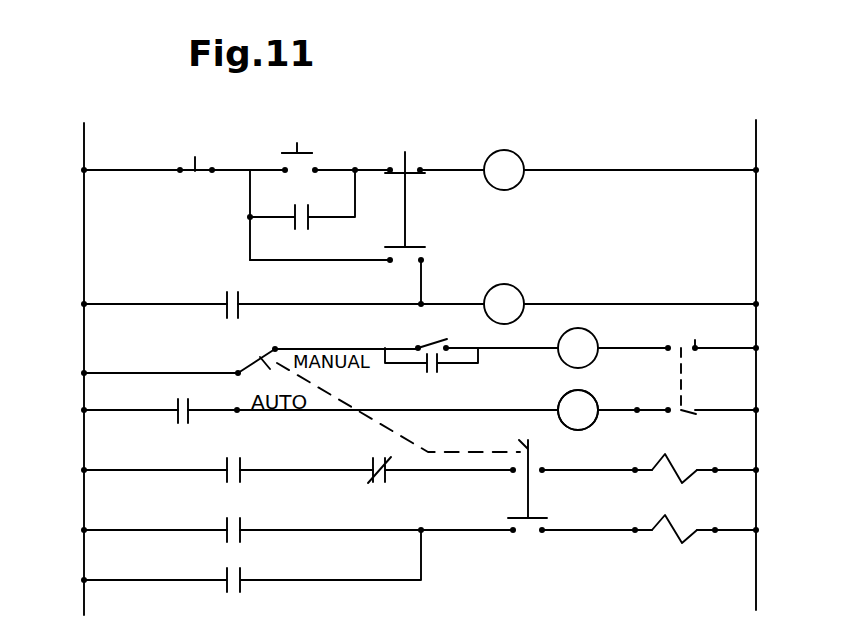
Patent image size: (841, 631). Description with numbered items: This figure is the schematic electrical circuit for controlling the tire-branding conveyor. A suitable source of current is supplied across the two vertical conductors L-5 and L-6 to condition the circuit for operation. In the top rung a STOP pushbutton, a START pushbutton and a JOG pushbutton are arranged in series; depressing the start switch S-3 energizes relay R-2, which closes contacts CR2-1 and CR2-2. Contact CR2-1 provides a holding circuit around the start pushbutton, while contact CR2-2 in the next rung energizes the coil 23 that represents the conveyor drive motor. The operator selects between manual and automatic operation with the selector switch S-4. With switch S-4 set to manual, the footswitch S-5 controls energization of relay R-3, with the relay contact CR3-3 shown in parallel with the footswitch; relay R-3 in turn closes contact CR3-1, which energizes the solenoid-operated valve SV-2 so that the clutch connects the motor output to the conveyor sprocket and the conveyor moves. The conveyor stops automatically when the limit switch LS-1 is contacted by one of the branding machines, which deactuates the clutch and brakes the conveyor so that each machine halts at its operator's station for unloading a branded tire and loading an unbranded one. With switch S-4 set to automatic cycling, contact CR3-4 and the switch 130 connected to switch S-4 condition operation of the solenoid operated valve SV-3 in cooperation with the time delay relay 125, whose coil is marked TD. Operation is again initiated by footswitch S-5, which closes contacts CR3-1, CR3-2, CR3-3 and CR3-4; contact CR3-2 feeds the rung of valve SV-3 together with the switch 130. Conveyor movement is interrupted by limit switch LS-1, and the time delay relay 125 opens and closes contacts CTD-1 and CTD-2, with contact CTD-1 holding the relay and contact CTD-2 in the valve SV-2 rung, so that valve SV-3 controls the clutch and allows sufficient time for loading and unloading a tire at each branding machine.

The conductor L-5 is at (84, 136).
The conductor L-6 is at (756, 140).
The stop pushbutton STOP is at (187, 145).
The start pushbutton START is at (292, 136).
The switch S-3 is at (307, 149).
The jog pushbutton contacts JOG is at (402, 183).
The relay R-2 is at (504, 170).
The contact CR2-1 is at (301, 215).
The contact CR2-2 is at (226, 296).
The motor/relay 23 is at (504, 304).
The switch S-4 is at (258, 359).
The footswitch S-5 is at (423, 342).
The contact CR3-3 is at (431, 373).
The relay R-3 is at (578, 348).
The contact CR3-4 is at (171, 401).
The time delay relay 125 is at (560, 404).
The time delay coil TD is at (578, 410).
The limit switch LS-1 is at (685, 407).
The contact CR3-1 is at (226, 460).
The contact CTD-2 is at (362, 459).
The switch 130 is at (536, 479).
The solenoid-operated valve SV-2 is at (686, 460).
The contact CR3-2 is at (226, 522).
The solenoid operated valve SV-3 is at (686, 521).
The contact CTD-1 is at (251, 561).